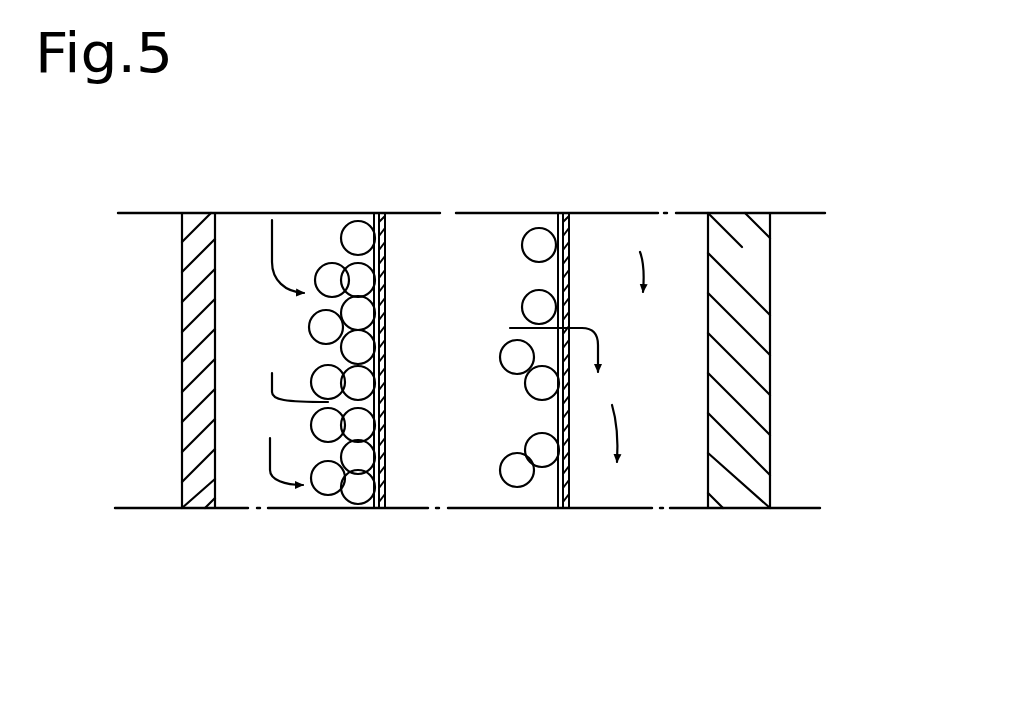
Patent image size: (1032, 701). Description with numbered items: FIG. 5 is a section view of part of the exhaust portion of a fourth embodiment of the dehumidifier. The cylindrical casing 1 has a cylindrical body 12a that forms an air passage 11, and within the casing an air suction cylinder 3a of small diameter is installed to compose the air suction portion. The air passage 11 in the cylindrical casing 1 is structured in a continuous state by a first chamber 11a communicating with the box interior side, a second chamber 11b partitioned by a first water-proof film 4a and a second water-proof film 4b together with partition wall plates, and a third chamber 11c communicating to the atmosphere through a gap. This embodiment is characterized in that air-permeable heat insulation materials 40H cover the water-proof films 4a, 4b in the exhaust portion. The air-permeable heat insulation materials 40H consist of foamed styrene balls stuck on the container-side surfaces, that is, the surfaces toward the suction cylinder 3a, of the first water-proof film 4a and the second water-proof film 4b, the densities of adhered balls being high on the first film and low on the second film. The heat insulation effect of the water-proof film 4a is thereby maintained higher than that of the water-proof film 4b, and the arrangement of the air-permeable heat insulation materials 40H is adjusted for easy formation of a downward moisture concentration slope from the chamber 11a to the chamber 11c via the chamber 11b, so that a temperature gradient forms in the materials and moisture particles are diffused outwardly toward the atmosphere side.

The cylindrical casing 1 is at (800, 343).
The air suction cylinder 3a is at (188, 380).
The cylindrical body 12a is at (770, 418).
The first water-proof film 4a is at (386, 262).
The second water-proof film 4b is at (571, 266).
The air passage 11 is at (303, 205).
The first chamber 11a is at (243, 491).
The second chamber 11b is at (452, 490).
The third chamber 11c is at (638, 490).
The air-permeable heat insulation materials 40H is at (351, 240).